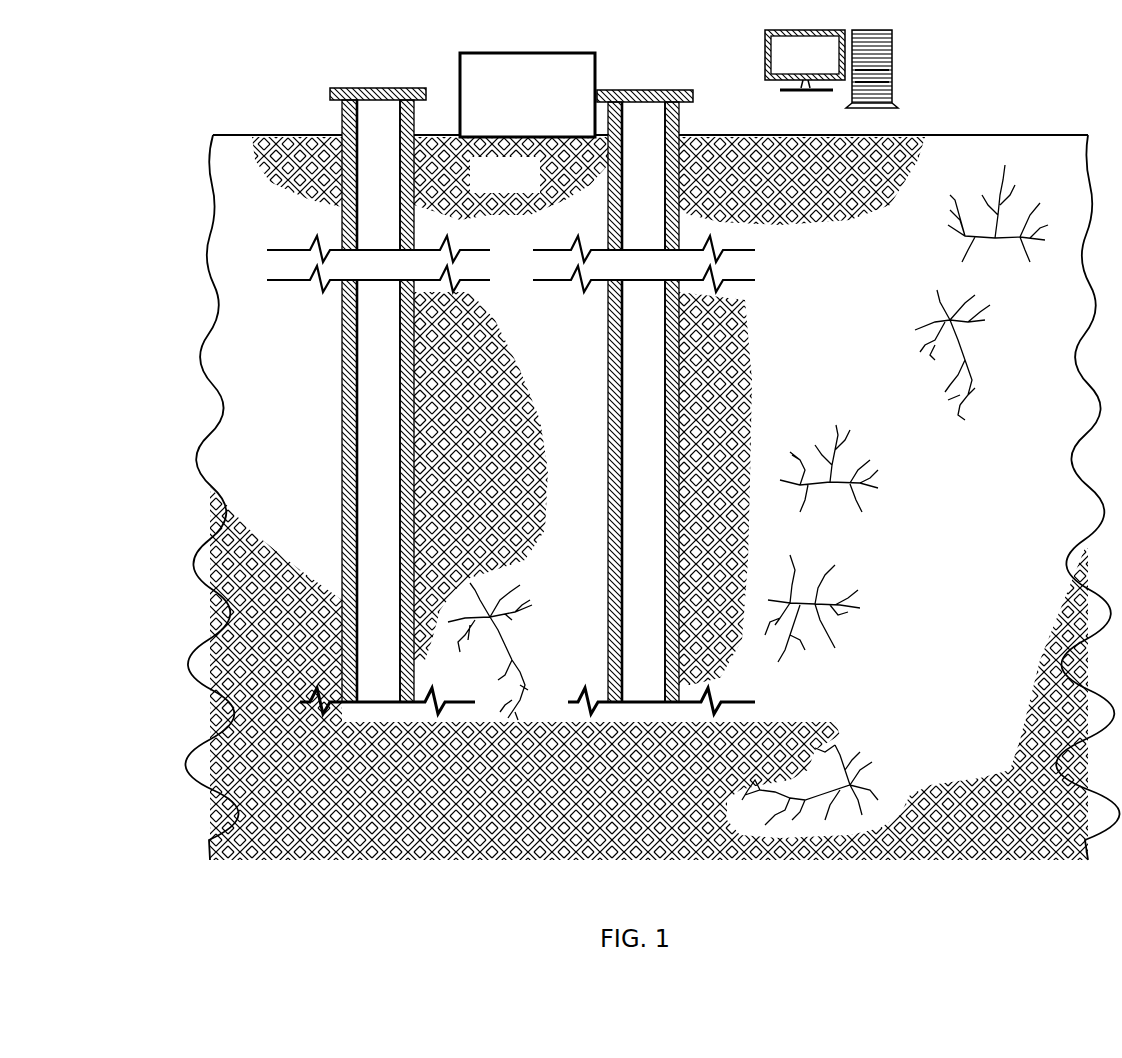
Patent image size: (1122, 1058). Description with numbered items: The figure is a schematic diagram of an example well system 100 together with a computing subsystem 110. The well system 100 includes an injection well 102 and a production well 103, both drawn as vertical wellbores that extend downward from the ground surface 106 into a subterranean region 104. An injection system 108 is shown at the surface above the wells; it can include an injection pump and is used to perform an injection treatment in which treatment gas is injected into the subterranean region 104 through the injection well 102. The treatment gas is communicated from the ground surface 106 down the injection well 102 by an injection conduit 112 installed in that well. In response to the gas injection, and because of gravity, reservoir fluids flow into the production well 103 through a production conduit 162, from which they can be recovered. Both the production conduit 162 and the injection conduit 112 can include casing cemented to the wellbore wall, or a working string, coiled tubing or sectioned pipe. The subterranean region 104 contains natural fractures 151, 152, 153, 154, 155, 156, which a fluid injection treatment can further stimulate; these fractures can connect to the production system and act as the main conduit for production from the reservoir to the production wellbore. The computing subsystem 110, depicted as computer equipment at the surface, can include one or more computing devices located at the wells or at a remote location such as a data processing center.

The well system 100 is at (170, 76).
The injection well 102 is at (611, 305).
The production well 103 is at (345, 310).
The subterranean region 104 is at (525, 186).
The ground surface 106 is at (1033, 135).
The injection system 108 is at (544, 106).
The computing subsystem 110 is at (762, 38).
The injection conduit 112 is at (618, 376).
The natural fracture 151 is at (916, 237).
The natural fracture 152 is at (892, 323).
The natural fracture 153 is at (899, 499).
The natural fracture 154 is at (862, 627).
The natural fracture 155 is at (891, 774).
The natural fracture 156 is at (535, 621).
The production conduit 162 is at (353, 376).